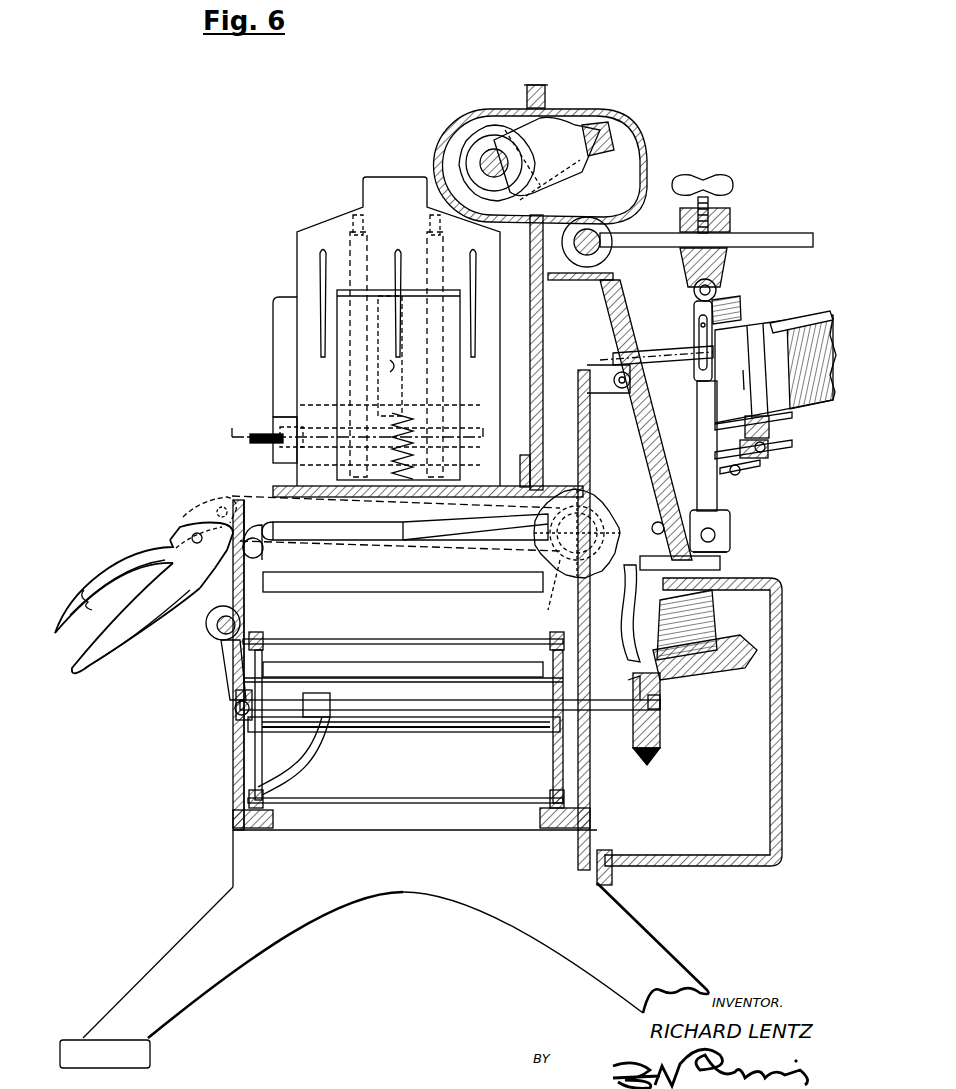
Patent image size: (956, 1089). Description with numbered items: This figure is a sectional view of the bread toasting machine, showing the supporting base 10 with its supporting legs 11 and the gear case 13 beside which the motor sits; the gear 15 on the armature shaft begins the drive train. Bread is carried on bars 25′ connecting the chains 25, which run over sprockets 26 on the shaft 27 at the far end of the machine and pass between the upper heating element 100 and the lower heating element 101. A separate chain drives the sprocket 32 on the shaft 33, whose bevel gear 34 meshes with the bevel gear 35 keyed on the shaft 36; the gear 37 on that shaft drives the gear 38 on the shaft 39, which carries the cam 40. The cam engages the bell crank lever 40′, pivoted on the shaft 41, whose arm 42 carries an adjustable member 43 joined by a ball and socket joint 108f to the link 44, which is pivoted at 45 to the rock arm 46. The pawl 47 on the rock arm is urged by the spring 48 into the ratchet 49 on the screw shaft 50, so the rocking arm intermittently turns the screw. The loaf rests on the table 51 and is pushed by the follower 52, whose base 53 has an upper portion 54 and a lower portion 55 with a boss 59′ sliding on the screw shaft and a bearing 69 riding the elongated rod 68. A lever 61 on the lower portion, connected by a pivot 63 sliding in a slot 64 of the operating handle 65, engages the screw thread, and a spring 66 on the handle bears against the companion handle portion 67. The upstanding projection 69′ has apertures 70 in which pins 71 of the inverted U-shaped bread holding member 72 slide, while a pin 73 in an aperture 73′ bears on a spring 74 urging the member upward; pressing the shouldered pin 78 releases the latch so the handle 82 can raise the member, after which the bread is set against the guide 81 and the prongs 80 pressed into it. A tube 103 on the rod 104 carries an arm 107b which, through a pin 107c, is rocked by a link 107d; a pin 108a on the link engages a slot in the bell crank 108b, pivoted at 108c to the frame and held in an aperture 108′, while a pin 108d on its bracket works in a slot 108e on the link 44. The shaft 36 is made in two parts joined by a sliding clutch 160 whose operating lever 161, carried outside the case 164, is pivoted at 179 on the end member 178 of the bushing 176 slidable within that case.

The supporting base 10 is at (233, 815).
The supporting legs 11 is at (215, 972).
The gear case 13 is at (782, 790).
The gear 15 is at (359, 434).
The chains 25 is at (550, 632).
The bars 25′ is at (440, 640).
The sprockets 26 is at (550, 684).
The shaft 27 is at (380, 725).
The sprocket 32 is at (553, 758).
The shaft 33 is at (660, 720).
The bevel gear 34 is at (658, 756).
The bevel gear 35 is at (730, 664).
The shaft 36 is at (612, 318).
The gear 37 is at (612, 138).
The gear 38 is at (486, 112).
The shaft 39 is at (480, 160).
The cam 40 is at (480, 142).
The bell crank lever 40′ is at (535, 130).
The shaft 41 is at (605, 236).
The arm 42 is at (627, 245).
The member 43 is at (730, 215).
The link 44 is at (694, 310).
The pivot 45 is at (730, 532).
The rock arm 46 is at (730, 550).
The pawl 47 is at (624, 624).
The spring 48 is at (685, 566).
The ratchet 49 is at (540, 548).
The screw shaft 50 is at (552, 560).
The table 51 is at (486, 485).
The follower 52 is at (270, 306).
The base 53 is at (222, 482).
The upper portion 54 is at (183, 518).
The lower portion 55 is at (322, 540).
The boss 59′ is at (545, 585).
The lever 61 is at (455, 534).
The pivot 63 is at (213, 497).
The slot 64 is at (210, 522).
The operating handle 65 is at (112, 560).
The spring 66 is at (76, 598).
The companion handle portion 67 is at (92, 672).
The elongated rod 68 is at (263, 548).
The bearing 69 is at (262, 560).
The upstanding projection 69′ is at (460, 326).
The apertures 70 is at (470, 312).
The pins 71 is at (337, 292).
The bread holding member 72 is at (335, 222).
The pin 73 is at (378, 398).
The aperture 73′ is at (390, 373).
The spring 74 is at (408, 440).
The shouldered pin 78 is at (260, 433).
The bread engaging prongs 80 is at (320, 265).
The guide 81 is at (525, 455).
The handle portion 82 is at (405, 177).
The upper heating element 100 is at (400, 584).
The lower heating element 101 is at (448, 652).
The tube 103 is at (210, 630).
The rod 104 is at (226, 642).
The arm 107b is at (238, 675).
The pin 107c is at (238, 710).
The link 107d is at (472, 733).
The aperture 108′ is at (633, 680).
The pin 108a is at (660, 700).
The bell crank 108b is at (705, 606).
The pivot 108c is at (630, 386).
The pin 108d is at (742, 310).
The slot 108e is at (700, 325).
The ball and socket joint 108f is at (716, 286).
The sliding clutch 160 is at (714, 484).
The operating lever 161 is at (756, 462).
The case 164 is at (786, 340).
The bushing 176 is at (770, 422).
The end member 178 is at (775, 447).
The pivot 179 is at (765, 458).